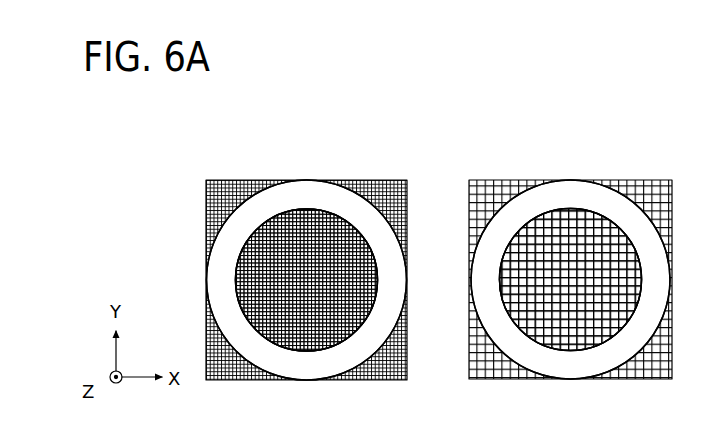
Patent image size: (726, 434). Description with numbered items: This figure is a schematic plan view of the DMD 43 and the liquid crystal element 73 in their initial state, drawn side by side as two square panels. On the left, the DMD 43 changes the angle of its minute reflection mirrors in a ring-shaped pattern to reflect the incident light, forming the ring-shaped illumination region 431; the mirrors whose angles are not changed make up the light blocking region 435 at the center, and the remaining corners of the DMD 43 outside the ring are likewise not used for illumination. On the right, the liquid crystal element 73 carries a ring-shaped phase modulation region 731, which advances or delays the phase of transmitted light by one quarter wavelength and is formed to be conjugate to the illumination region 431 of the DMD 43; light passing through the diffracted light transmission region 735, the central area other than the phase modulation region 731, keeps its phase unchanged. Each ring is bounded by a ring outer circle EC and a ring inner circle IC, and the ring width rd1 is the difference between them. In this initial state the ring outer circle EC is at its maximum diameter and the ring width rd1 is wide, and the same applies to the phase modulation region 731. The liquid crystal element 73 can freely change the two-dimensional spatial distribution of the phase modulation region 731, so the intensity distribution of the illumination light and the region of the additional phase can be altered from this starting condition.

The DMD 43 is at (286, 268).
The illumination region 431 is at (278, 192).
The light blocking region 435 is at (308, 327).
The liquid crystal element 73 is at (554, 269).
The phase modulation region 731 is at (537, 205).
The diffracted light transmission region 735 is at (575, 320).
The ring outer circle EC is at (363, 198).
The ring inner circle IC is at (375, 262).
The ring width rd1 is at (254, 292).